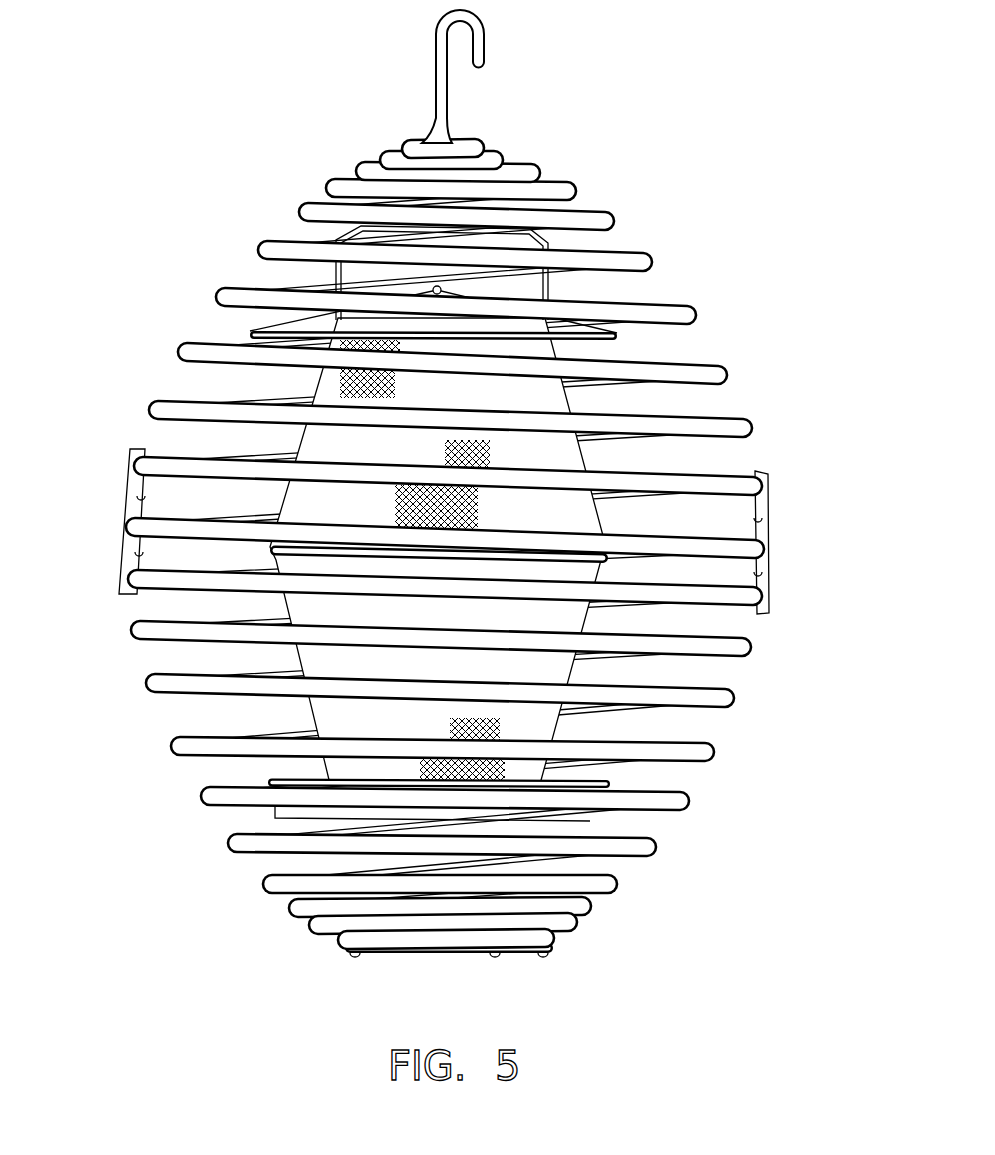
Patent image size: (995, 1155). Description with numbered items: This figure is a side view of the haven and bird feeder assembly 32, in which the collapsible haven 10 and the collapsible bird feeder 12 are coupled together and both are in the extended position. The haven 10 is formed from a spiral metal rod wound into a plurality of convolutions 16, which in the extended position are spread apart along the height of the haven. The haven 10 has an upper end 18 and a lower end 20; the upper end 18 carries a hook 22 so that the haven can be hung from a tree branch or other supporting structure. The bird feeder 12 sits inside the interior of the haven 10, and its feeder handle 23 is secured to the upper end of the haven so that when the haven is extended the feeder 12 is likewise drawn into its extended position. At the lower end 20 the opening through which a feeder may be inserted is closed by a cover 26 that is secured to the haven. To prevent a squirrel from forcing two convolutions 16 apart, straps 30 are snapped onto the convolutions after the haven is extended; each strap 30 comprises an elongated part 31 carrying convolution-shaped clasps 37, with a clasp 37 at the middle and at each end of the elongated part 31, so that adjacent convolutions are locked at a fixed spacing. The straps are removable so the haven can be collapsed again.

The collapsible haven 10 is at (686, 243).
The bird feeder 12 is at (539, 406).
The convolutions 16 is at (698, 322).
The upper end 18 is at (485, 130).
The lower end 20 is at (330, 960).
The hook 22 is at (482, 30).
The feeder handle 23 is at (552, 242).
The cover 26 is at (470, 955).
The straps 30 is at (120, 525).
The elongated part 31 is at (125, 497).
The assembly 32 is at (750, 126).
The clasps 37 is at (146, 452).